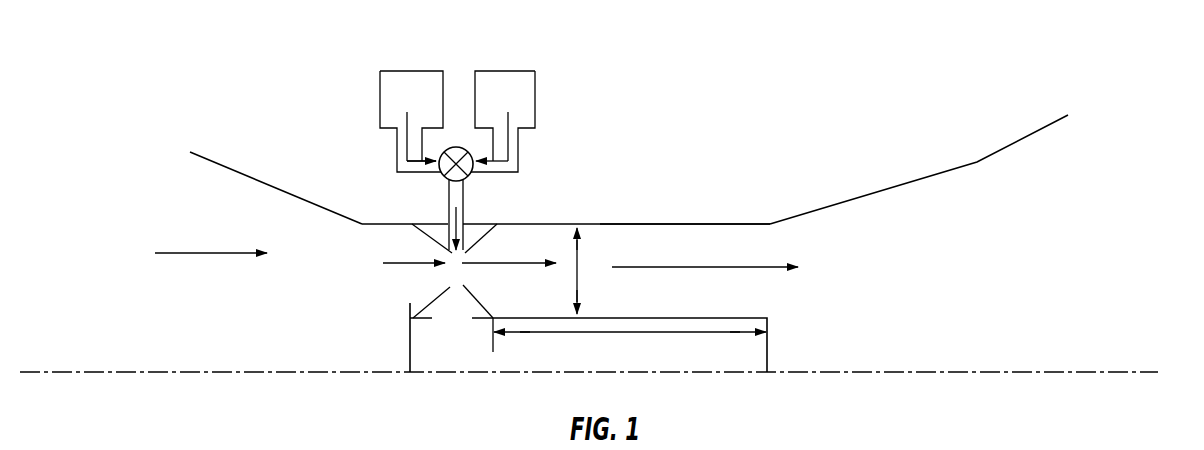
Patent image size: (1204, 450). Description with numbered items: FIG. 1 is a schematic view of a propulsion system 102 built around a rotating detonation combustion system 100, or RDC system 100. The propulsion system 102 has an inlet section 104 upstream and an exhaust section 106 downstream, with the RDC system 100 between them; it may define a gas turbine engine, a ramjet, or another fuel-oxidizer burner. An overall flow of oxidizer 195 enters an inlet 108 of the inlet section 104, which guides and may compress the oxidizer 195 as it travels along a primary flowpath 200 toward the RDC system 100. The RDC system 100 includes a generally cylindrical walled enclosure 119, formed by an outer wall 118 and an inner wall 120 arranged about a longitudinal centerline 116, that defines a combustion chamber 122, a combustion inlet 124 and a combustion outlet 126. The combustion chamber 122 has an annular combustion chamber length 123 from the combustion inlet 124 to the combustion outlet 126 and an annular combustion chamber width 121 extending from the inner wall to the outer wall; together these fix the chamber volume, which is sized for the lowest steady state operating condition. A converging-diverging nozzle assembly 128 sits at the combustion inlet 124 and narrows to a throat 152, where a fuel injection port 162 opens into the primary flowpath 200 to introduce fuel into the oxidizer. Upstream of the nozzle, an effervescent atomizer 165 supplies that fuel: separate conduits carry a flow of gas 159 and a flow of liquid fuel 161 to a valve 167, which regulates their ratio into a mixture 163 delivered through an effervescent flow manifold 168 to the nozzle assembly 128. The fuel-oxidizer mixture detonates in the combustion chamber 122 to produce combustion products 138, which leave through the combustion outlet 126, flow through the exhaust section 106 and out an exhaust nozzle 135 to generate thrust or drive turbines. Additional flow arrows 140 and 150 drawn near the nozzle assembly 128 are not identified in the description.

The rotating detonation combustion system 100 is at (596, 148).
The propulsion system 102 is at (744, 85).
The inlet section 104 is at (241, 140).
The exhaust section 106 is at (902, 147).
The inlet 108 is at (130, 161).
The longitudinal centerline 116 is at (1130, 372).
The outer wall 118 is at (750, 222).
The walled enclosure 119 is at (703, 224).
The inner wall 120 is at (722, 313).
The combustion chamber width 121 is at (580, 253).
The combustion chamber 122 is at (610, 255).
The combustion chamber length 123 is at (647, 333).
The combustion inlet 124 is at (502, 237).
The combustion outlet 126 is at (789, 281).
The nozzle assembly 128 is at (430, 212).
The exhaust nozzle 135 is at (1082, 88).
The combustion products 138 is at (757, 267).
The secondary flow 140 is at (426, 282).
The entrained flow 150 is at (417, 239).
The throat 152 is at (466, 255).
The gas 159 is at (400, 137).
The liquid fuel 161 is at (508, 113).
The fuel injection port 162 is at (465, 285).
The mixture of gas and liquid fuel 163 is at (463, 209).
The effervescent atomizer 165 is at (563, 40).
The valve 167 is at (456, 147).
The effervescent flow manifold 168 is at (469, 178).
The oxidizer 195 is at (208, 254).
The primary flowpath 200 is at (325, 313).